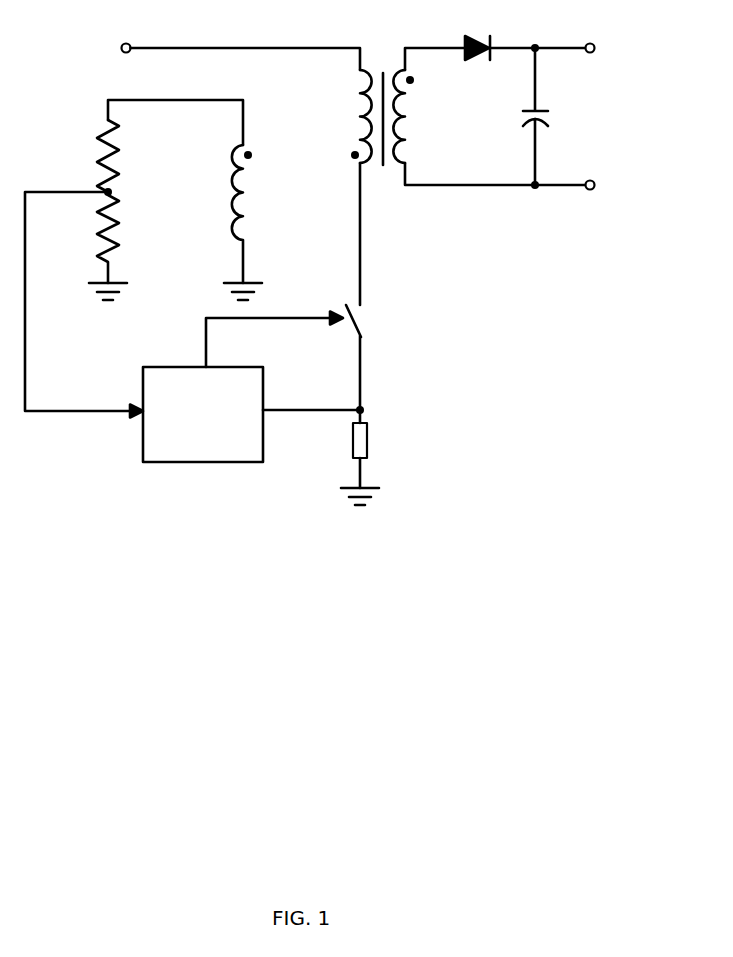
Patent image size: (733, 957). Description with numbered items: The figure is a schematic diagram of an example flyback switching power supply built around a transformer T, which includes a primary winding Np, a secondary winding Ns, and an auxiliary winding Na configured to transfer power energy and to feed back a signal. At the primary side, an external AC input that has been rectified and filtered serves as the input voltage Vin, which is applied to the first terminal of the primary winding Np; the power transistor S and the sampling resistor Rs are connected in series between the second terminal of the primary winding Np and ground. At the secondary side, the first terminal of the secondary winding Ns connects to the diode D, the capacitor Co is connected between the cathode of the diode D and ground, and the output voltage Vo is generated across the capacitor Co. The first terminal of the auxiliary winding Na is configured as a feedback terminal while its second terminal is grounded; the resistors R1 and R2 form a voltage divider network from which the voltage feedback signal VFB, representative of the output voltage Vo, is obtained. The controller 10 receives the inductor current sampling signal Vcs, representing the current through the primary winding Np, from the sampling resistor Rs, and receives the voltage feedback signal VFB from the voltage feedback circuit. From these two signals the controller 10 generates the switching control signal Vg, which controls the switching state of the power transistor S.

The controller 10 is at (214, 432).
The input voltage Vin is at (233, 44).
The resistor R1 is at (125, 156).
The resistor R2 is at (125, 237).
The auxiliary winding Na is at (257, 214).
The transformer T is at (383, 98).
The primary winding Np is at (348, 116).
The secondary winding Ns is at (417, 116).
The diode D is at (527, 36).
The capacitor Co is at (518, 116).
The output voltage Vo is at (589, 117).
The power transistor S is at (369, 357).
The switching control signal Vg is at (274, 328).
The inductor current sampling signal Vcs is at (313, 399).
The voltage feedback signal VFB is at (84, 305).
The sampling resistor Rs is at (379, 449).